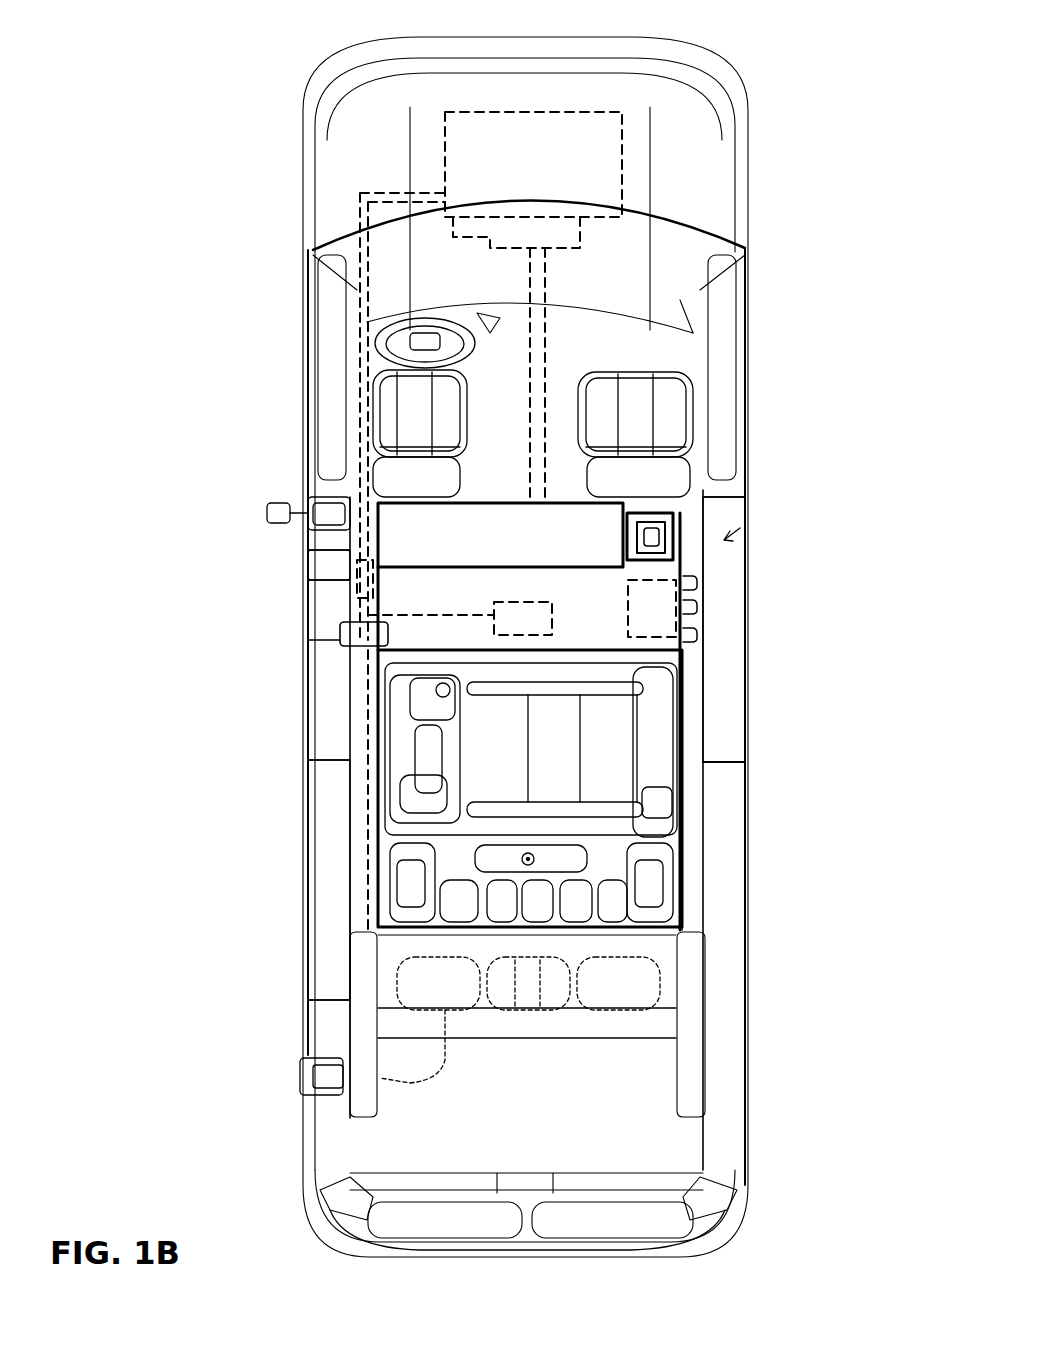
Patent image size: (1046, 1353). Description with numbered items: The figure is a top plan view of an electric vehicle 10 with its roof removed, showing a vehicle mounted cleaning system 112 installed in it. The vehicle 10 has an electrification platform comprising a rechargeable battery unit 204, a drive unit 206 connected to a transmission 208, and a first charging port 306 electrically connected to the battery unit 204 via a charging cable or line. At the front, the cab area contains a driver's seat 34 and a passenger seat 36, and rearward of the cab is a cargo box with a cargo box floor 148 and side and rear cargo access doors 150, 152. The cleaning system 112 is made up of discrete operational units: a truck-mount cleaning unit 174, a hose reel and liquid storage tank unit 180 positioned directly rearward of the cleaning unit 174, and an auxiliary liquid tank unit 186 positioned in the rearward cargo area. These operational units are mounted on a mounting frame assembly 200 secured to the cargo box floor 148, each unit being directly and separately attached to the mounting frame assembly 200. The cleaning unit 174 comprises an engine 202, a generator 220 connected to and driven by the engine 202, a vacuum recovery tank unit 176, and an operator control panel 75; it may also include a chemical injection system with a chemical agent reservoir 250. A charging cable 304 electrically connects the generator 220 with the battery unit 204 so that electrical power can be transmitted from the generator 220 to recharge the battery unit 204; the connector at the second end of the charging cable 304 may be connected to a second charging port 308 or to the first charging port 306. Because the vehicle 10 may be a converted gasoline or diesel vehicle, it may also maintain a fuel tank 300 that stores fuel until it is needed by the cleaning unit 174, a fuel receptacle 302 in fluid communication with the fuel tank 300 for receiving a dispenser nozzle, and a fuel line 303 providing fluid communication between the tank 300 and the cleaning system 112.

The electric vehicle 10 is at (820, 173).
The driver's seat 34 is at (380, 390).
The passenger seat 36 is at (682, 408).
The operator control panel 75 is at (690, 619).
The vehicle mounted cleaning system 112 is at (328, 723).
The cargo box floor 148 is at (642, 940).
The side cargo access door 150 is at (740, 663).
The rear cargo access door 152 is at (578, 1197).
The truck-mount cleaning unit 174 is at (710, 550).
The vacuum recovery tank unit 176 is at (393, 520).
The hose reel and liquid storage tank unit 180 is at (530, 788).
The auxiliary liquid tank unit 186 is at (500, 870).
The mounting frame assembly 200 is at (684, 713).
The engine 202 is at (660, 593).
The rechargeable battery unit 204 is at (455, 183).
The drive unit 206 is at (575, 236).
The transmission 208 is at (545, 347).
The generator 220 is at (495, 628).
The chemical agent reservoir 250 is at (678, 517).
The fuel tank 300 is at (405, 998).
The fuel receptacle 302 is at (303, 1092).
The fuel line 303 is at (372, 880).
The charging cable 304 is at (357, 402).
The first charging port 306 is at (305, 497).
The second charging port 308 is at (310, 580).